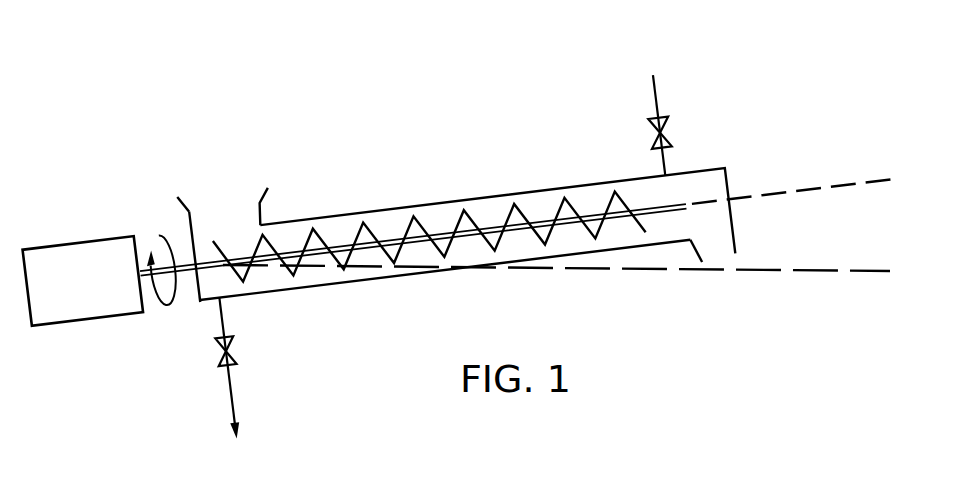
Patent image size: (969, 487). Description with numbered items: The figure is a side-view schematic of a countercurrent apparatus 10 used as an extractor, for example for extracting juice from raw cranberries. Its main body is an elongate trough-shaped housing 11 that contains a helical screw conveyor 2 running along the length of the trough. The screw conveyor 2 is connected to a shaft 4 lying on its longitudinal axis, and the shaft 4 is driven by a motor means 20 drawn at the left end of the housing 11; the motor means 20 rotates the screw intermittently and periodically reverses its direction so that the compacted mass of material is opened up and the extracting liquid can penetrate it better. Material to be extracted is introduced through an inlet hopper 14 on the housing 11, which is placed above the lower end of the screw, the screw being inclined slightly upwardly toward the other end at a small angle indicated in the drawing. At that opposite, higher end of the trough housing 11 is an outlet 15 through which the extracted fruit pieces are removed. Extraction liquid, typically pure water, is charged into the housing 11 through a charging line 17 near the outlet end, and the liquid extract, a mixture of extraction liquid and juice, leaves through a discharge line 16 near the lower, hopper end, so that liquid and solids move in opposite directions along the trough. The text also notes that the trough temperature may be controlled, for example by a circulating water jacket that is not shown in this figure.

The countercurrent apparatus 10 is at (457, 237).
The helical screw conveyor 2 is at (473, 208).
The shaft 4 is at (675, 213).
The trough-shaped housing 11 is at (627, 252).
The inlet hopper 14 is at (188, 212).
The outlet 15 is at (735, 253).
The discharge line 16 is at (225, 320).
The charging line 17 is at (658, 158).
The motor means 20 is at (90, 322).